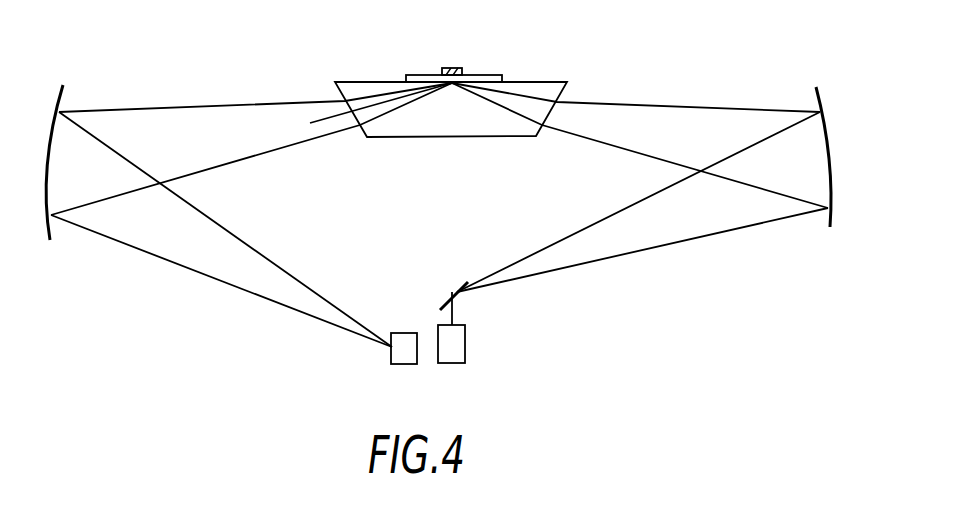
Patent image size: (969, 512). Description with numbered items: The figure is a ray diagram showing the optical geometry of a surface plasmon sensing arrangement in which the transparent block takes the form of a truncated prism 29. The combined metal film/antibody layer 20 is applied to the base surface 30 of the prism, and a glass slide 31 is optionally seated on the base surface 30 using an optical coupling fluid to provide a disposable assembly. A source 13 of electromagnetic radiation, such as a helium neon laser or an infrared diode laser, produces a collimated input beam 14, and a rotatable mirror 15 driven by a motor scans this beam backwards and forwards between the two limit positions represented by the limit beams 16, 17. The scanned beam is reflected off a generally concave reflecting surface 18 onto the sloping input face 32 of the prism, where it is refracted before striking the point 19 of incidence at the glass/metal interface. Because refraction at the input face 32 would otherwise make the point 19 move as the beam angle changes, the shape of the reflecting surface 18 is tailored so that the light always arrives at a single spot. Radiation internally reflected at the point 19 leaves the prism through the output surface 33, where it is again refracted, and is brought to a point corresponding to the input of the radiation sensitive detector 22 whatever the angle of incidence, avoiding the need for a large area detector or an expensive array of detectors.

The source 13 is at (457, 349).
The collimated input beam 14 is at (452, 309).
The rotatable mirror 15 is at (455, 287).
The limit beam 16 is at (223, 282).
The limit beam 17 is at (247, 245).
The concave reflecting surface 18 is at (828, 186).
The point of incidence 19 is at (50, 170).
The combined metal film/antibody layer 20 is at (460, 68).
The radiation sensitive detector 22 is at (403, 348).
The truncated prism 29 is at (488, 125).
The base surface 30 is at (360, 82).
The glass slide 31 is at (423, 75).
The sloping input face 32 is at (567, 82).
The output surface 33 is at (362, 112).